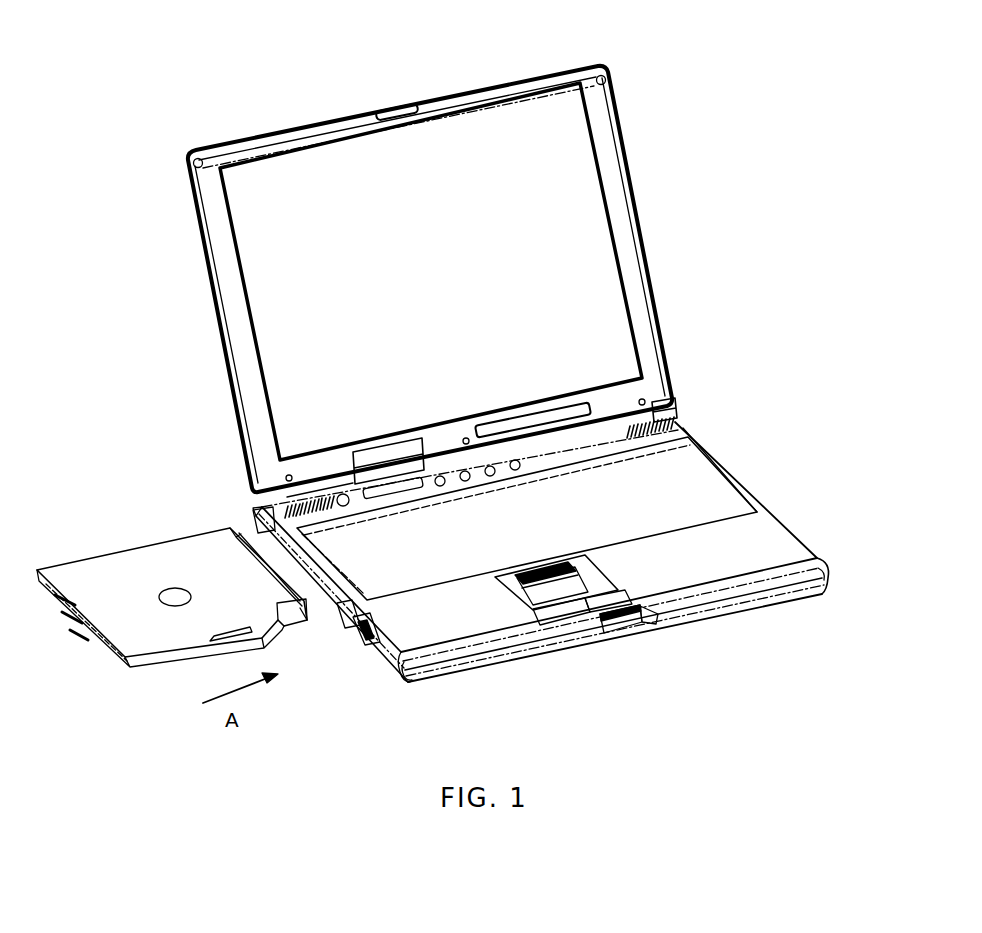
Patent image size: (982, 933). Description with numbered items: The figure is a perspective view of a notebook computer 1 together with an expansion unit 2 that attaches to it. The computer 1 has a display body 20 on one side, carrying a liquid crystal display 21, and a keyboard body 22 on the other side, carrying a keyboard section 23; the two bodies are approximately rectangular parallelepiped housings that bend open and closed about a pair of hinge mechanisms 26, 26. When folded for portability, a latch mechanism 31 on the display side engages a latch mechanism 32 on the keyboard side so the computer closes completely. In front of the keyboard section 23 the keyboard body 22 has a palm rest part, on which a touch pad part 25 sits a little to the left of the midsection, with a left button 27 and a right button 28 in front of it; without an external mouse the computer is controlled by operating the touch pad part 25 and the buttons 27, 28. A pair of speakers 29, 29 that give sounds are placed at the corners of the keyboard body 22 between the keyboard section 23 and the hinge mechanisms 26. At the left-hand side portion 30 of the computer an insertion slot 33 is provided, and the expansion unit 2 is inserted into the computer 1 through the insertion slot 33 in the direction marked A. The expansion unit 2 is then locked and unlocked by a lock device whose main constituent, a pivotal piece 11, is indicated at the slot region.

The computer 1 is at (692, 160).
The expansion unit 2 is at (160, 645).
The pivotal piece 11 is at (350, 624).
The display body 20 is at (588, 252).
The liquid crystal display 21 is at (242, 232).
The keyboard body 22 is at (778, 535).
The keyboard section 23 is at (686, 466).
The touch pad part 25 is at (550, 592).
The hinge mechanisms 26 is at (672, 405).
The left button 27 is at (568, 612).
The right button 28 is at (657, 622).
The speakers 29 is at (677, 420).
The left-hand side portion 30 is at (405, 672).
The latch mechanism 31 is at (393, 105).
The latch mechanism 32 is at (628, 630).
The insertion slot 33 is at (328, 592).